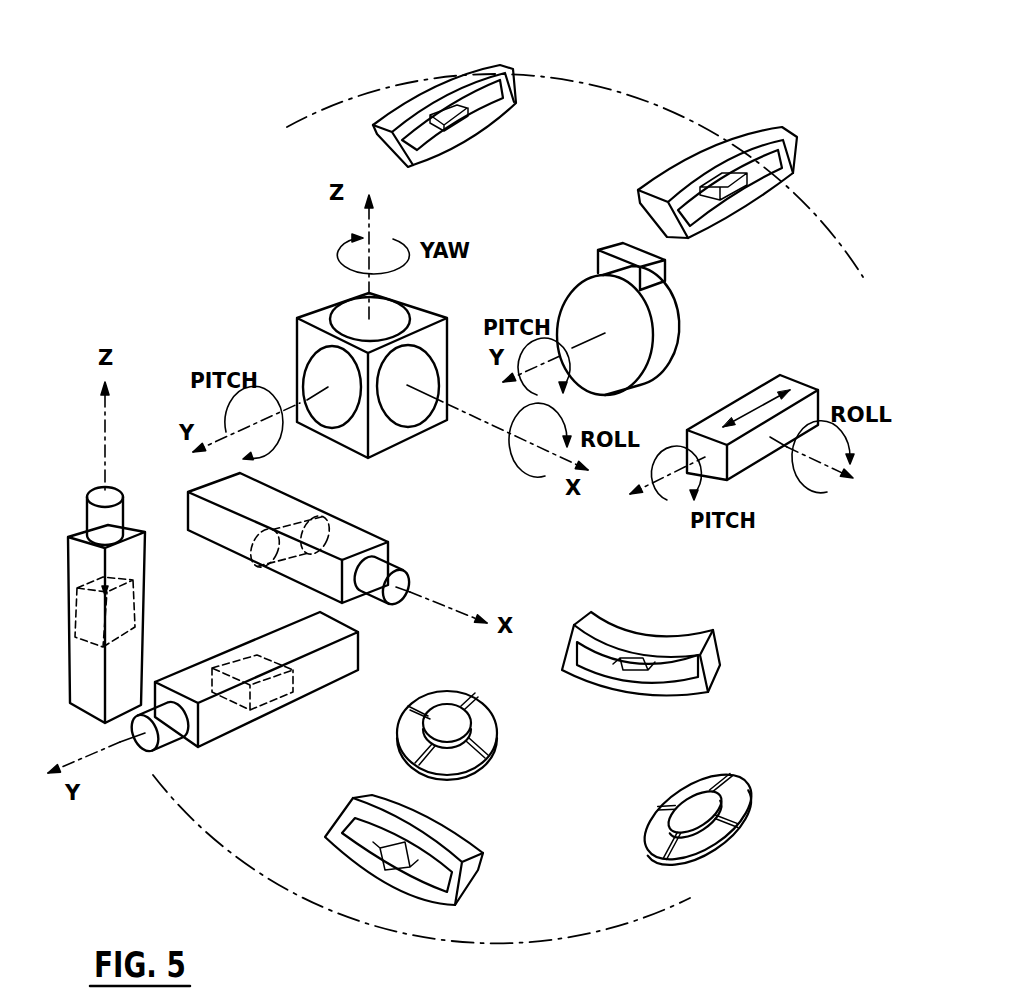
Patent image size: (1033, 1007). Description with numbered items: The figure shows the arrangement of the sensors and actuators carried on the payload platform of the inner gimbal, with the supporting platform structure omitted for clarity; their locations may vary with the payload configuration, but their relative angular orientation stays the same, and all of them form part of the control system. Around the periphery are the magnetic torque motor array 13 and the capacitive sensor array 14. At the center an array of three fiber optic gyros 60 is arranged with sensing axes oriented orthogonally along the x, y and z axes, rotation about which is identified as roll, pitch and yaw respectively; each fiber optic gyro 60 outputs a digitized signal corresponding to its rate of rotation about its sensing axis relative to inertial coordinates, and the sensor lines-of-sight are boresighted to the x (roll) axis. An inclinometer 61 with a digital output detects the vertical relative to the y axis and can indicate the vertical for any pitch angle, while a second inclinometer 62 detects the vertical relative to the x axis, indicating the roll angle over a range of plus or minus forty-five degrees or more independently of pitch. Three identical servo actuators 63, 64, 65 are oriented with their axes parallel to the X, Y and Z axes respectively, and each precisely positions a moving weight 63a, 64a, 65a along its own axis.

The magnetic torque motor array 13 is at (510, 93).
The capacitive sensor array 14 is at (488, 732).
The fiber optic gyro 60 is at (308, 335).
The inclinometer 61 is at (667, 315).
The second inclinometer 62 is at (803, 392).
The servo actuator 63 is at (362, 540).
The moving weight 63a is at (332, 513).
The servo actuator 64 is at (232, 718).
The moving weight 64a is at (295, 702).
The servo actuator 65 is at (80, 575).
The moving weight 65a is at (62, 628).